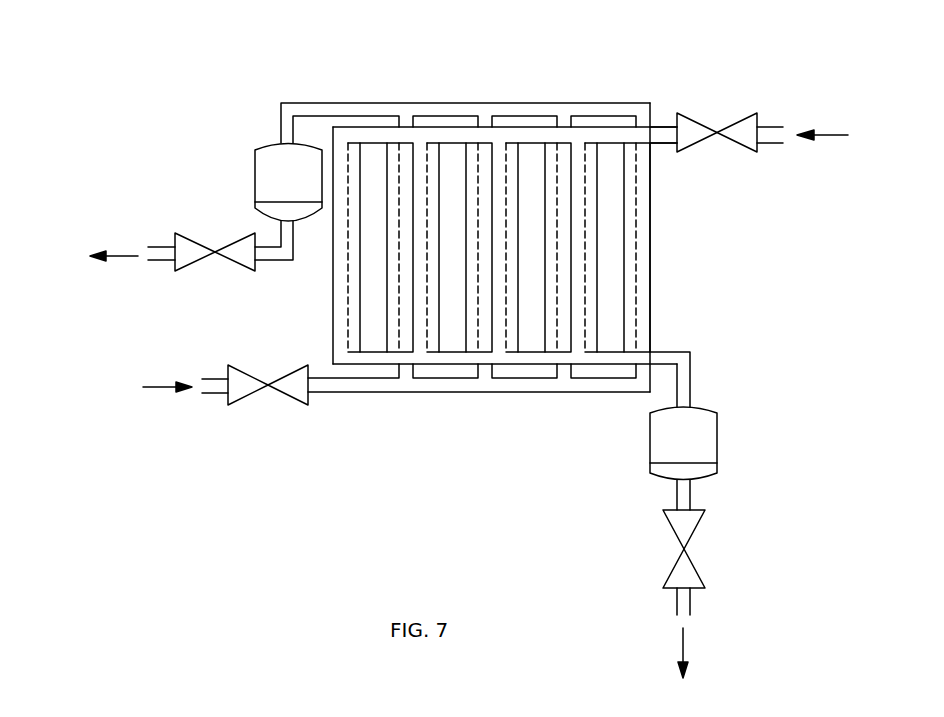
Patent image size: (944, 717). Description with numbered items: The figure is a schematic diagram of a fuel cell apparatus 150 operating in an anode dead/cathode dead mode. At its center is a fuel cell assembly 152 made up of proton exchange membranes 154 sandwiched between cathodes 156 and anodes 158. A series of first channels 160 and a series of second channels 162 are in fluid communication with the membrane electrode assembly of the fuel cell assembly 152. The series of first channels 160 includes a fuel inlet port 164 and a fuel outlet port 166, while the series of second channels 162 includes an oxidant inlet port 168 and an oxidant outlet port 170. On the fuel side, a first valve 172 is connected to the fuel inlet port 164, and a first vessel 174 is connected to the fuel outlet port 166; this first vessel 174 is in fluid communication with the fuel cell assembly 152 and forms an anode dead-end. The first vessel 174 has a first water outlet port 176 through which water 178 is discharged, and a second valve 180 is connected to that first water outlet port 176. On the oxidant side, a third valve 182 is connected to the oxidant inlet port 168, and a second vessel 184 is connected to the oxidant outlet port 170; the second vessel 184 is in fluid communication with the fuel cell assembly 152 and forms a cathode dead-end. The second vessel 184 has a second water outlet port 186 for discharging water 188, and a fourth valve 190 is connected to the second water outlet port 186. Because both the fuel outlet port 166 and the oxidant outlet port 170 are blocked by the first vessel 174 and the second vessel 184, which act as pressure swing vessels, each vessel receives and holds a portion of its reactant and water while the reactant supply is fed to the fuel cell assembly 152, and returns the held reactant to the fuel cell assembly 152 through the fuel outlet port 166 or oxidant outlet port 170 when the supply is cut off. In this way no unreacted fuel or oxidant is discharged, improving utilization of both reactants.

The fuel cell apparatus 150 is at (419, 534).
The fuel cell assembly 152 is at (468, 76).
The proton exchange membranes 154 is at (610, 180).
The cathodes 156 is at (475, 312).
The anodes 158 is at (510, 300).
The series of first channels 160 is at (422, 137).
The series of second channels 162 is at (485, 385).
The fuel inlet port 164 is at (660, 133).
The fuel outlet port 166 is at (683, 383).
The oxidant inlet port 168 is at (357, 385).
The oxidant outlet port 170 is at (283, 113).
The first valve 172 is at (688, 137).
The first vessel 174 is at (718, 443).
The first water outlet port 176 is at (685, 498).
The water 178 is at (677, 470).
The second valve 180 is at (683, 580).
The third valve 182 is at (248, 398).
The second vessel 184 is at (253, 182).
The second water outlet port 186 is at (277, 255).
The water 188 is at (285, 210).
The fourth valve 190 is at (187, 257).